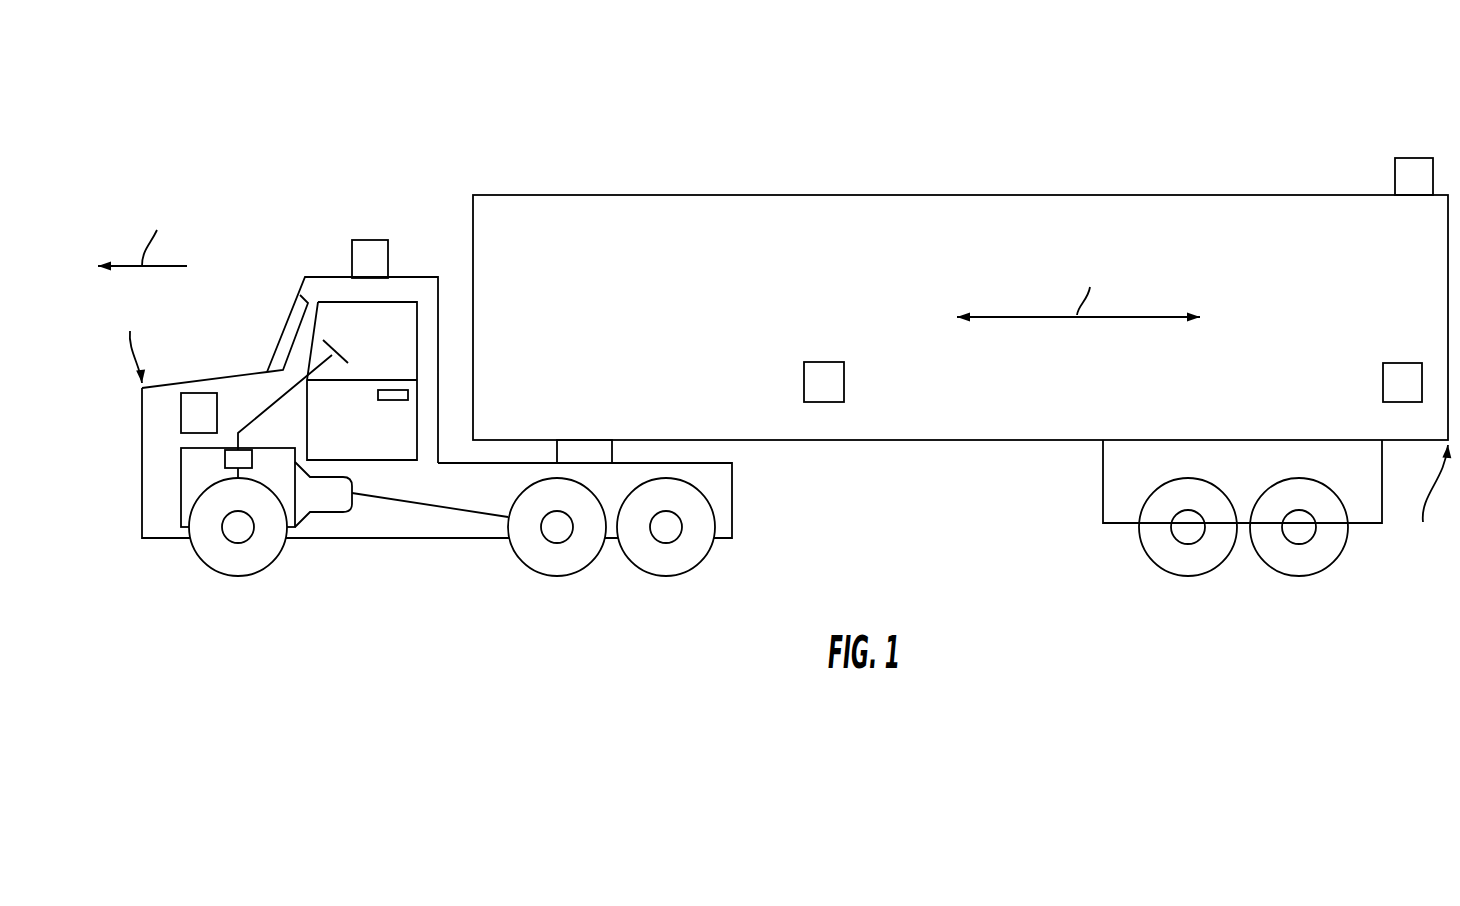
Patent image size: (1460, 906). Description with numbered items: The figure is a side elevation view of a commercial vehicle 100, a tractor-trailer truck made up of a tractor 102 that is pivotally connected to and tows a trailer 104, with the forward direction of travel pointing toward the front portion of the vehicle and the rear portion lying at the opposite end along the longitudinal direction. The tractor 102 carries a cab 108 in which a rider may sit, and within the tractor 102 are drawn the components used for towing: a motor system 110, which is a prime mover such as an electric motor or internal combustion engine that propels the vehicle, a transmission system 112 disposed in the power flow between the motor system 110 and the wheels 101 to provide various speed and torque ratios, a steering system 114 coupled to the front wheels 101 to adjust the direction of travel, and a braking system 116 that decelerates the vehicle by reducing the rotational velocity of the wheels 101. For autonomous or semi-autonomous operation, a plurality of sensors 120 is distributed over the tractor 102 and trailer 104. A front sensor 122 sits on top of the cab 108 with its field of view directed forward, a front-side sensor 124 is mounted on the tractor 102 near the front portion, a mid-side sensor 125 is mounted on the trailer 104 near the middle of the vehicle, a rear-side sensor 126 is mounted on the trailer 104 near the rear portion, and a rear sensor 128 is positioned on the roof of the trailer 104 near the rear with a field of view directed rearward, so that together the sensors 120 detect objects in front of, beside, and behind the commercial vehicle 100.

The commercial vehicle 100 is at (766, 343).
The wheels 101 is at (653, 552).
The tractor 102 is at (715, 424).
The trailer 104 is at (960, 327).
The cab 108 is at (402, 335).
The motor system 110 is at (188, 480).
The transmission system 112 is at (323, 500).
The steering system 114 is at (235, 460).
The braking system 116 is at (237, 532).
The sensors 120 is at (352, 255).
The front sensor 122 is at (375, 253).
The front-side sensor 124 is at (200, 408).
The mid-side sensor 125 is at (828, 377).
The rear-side sensor 126 is at (1407, 373).
The rear sensor 128 is at (1417, 175).